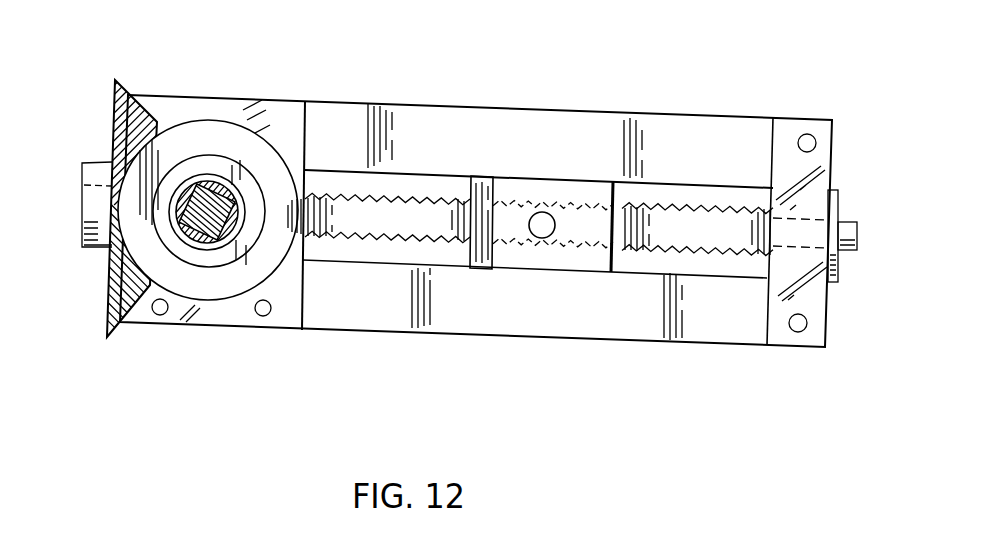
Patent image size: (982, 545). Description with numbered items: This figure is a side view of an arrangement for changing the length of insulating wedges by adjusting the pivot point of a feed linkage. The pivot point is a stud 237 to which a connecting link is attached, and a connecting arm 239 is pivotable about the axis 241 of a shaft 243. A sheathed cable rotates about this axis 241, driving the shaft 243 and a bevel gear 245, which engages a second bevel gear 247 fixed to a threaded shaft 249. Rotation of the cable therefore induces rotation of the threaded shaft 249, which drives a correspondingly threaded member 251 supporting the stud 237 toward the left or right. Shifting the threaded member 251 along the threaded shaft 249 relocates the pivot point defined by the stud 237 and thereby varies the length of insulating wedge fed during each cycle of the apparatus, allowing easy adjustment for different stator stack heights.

The stud 237 is at (548, 218).
The connecting arm 239 is at (640, 330).
The axis 241 is at (210, 222).
The shaft 243 is at (225, 232).
The bevel gear 245 is at (245, 148).
The second bevel gear 247 is at (150, 100).
The threaded shaft 249 is at (385, 207).
The threaded member 251 is at (490, 263).